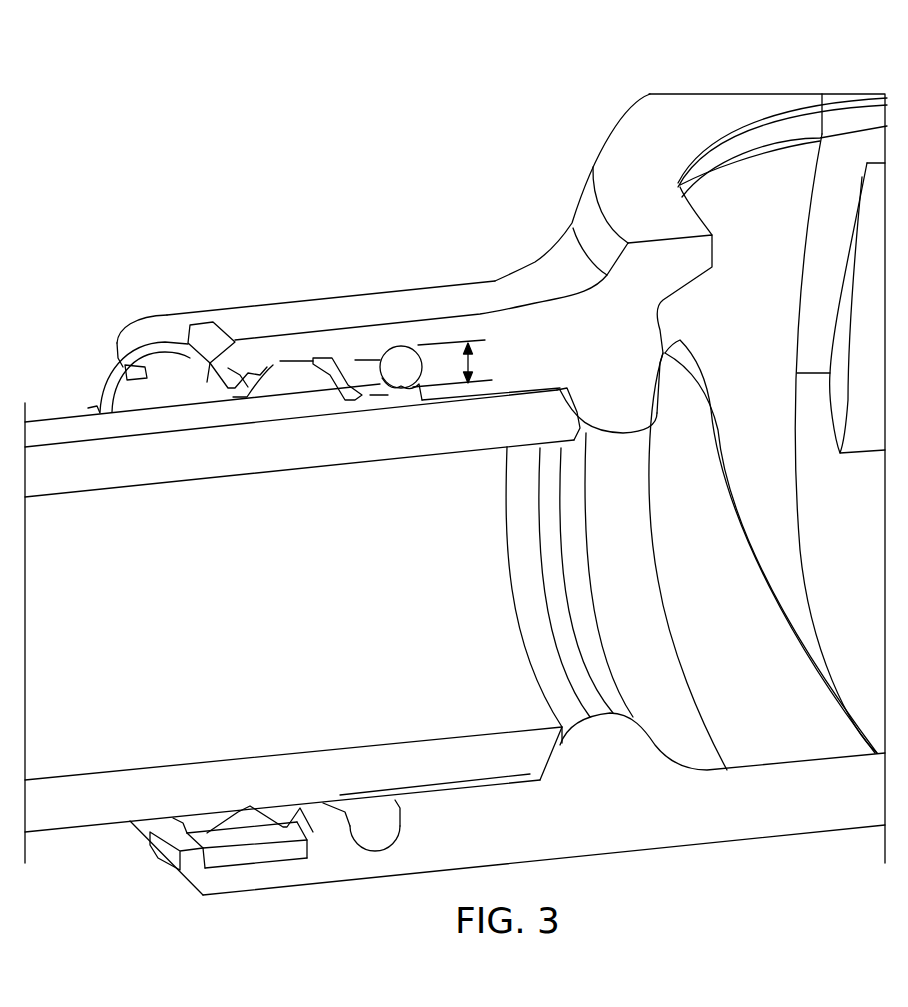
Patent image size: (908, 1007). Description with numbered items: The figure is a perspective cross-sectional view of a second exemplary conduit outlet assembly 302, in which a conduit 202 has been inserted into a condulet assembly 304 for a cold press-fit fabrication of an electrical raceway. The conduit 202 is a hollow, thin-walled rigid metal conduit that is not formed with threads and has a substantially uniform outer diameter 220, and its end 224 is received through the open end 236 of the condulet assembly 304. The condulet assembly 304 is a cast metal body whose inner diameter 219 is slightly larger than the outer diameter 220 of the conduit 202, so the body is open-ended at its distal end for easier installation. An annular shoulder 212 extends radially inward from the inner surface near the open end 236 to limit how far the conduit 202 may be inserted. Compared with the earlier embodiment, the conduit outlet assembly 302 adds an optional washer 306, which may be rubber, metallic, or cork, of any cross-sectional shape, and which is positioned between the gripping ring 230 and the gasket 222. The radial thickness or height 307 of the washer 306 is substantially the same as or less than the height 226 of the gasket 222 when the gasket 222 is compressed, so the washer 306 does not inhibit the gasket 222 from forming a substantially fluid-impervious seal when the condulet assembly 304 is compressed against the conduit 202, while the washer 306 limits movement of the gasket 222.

The conduit 202 is at (44, 400).
The annular shoulder 212 is at (617, 750).
The inner diameter 219 is at (272, 379).
The outer diameter 220 is at (205, 798).
The gasket 222 is at (402, 363).
The end 224 is at (60, 832).
The height 226 is at (473, 363).
The gripping ring 230 is at (125, 366).
The open end 236 is at (261, 313).
The conduit outlet assembly 302 is at (142, 237).
The condulet assembly 304 is at (623, 80).
The washer 306 is at (352, 360).
The radial thickness 307 is at (379, 410).